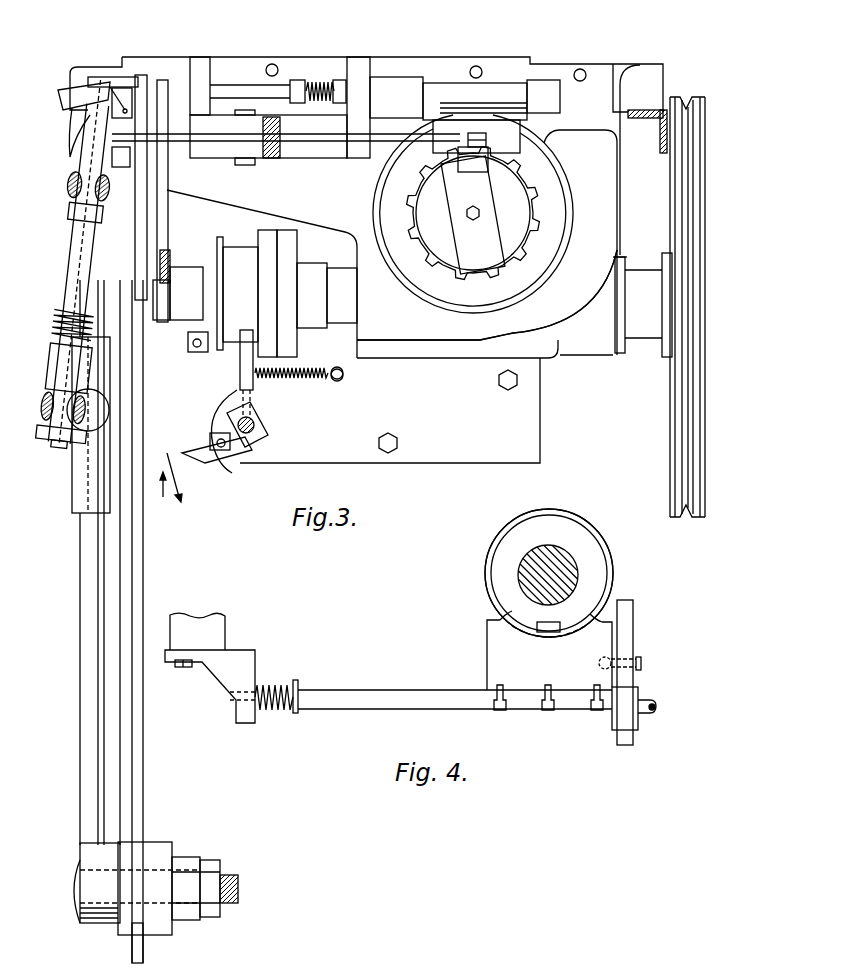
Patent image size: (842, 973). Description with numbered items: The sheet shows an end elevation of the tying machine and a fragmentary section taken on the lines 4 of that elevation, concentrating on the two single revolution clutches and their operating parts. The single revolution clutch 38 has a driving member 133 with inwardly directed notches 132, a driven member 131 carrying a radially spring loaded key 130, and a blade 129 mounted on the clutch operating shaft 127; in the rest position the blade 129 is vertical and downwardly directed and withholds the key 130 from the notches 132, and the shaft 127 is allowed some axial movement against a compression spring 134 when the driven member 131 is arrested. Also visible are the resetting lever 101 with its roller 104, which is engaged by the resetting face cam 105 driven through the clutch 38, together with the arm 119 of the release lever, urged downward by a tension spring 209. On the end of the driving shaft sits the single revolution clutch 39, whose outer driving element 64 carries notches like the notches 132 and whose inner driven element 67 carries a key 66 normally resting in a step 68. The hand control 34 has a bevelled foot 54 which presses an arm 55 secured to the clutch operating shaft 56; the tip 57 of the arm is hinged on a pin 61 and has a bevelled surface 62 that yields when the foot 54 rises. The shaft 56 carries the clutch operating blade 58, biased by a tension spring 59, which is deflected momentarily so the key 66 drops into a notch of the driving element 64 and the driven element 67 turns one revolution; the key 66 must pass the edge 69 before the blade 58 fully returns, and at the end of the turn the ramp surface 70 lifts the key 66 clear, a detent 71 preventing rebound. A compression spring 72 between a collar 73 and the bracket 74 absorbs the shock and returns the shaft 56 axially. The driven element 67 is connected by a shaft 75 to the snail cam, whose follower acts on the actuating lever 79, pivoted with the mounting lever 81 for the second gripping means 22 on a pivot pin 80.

In FIG. 3, the second gripping means 22 is at (70, 61).
In FIG. 3, the arm of the release lever 119 is at (92, 77).
In FIG. 3, the clutch operating shaft 127 is at (222, 90).
In FIG. 3, the compression spring 134 is at (314, 100).
In FIG. 3, the tension spring 209 is at (108, 103).
In FIG. 3, the resetting lever 101 is at (388, 142).
In FIG. 3, the resetting face cam 105 is at (453, 183).
In FIG. 3, the driving element 64 is at (287, 242).
In FIG. 4, the driving element 64 is at (613, 559).
In FIG. 3, the single revolution clutch 39 is at (300, 252).
In FIG. 4, the single revolution clutch 39 is at (611, 533).
In FIG. 3, the shaft 75 is at (185, 275).
In FIG. 4, the shaft 75 is at (546, 550).
In FIG. 3, the section lines 4— 4 is at (218, 232).
In FIG. 3, the blade 129 is at (520, 143).
In FIG. 3, the roller 104 is at (520, 160).
In FIG. 3, the driven member 131 is at (513, 197).
In FIG. 3, the notches 132 is at (540, 228).
In FIG. 3, the driving member 133 is at (560, 233).
In FIG. 3, the key 130 is at (517, 257).
In FIG. 3, the single revolution clutch 38 is at (505, 293).
In FIG. 3, the tension spring 59 is at (287, 370).
In FIG. 3, the clutch operating blade 58 is at (249, 382).
In FIG. 4, the clutch operating blade 58 is at (540, 679).
In FIG. 3, the clutch operating shaft 56 is at (258, 422).
In FIG. 4, the clutch operating shaft 56 is at (378, 697).
In FIG. 3, the bevelled foot 54 is at (175, 427).
In FIG. 3, the hinge pin 61 is at (172, 435).
In FIG. 3, the tip 57 is at (197, 462).
In FIG. 3, the arm 55 is at (240, 462).
In FIG. 3, the bevelled surface 62 is at (186, 477).
In FIG. 3, the hand control 34 is at (164, 501).
In FIG. 3, the mounting lever 81 is at (86, 763).
In FIG. 3, the actuating lever 79 is at (107, 791).
In FIG. 3, the pivot pin 80 is at (72, 890).
In FIG. 4, the driven element 67 is at (493, 574).
In FIG. 4, the edge of the blade 69 is at (495, 618).
In FIG. 4, the key 66 is at (552, 622).
In FIG. 4, the ramp surface 70 is at (620, 614).
In FIG. 4, the step 68 is at (536, 633).
In FIG. 4, the detent 71 is at (565, 630).
In FIG. 4, the bracket 74 is at (255, 665).
In FIG. 4, the compression spring 72 is at (276, 690).
In FIG. 4, the collar 73 is at (295, 713).